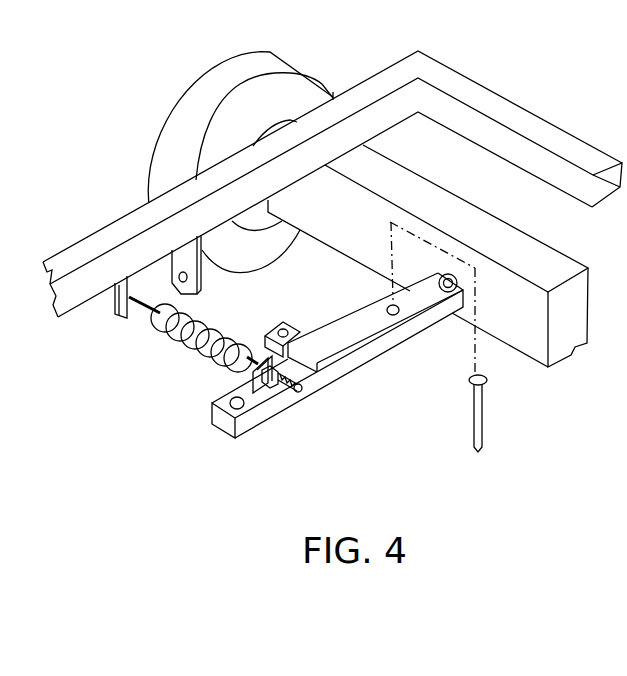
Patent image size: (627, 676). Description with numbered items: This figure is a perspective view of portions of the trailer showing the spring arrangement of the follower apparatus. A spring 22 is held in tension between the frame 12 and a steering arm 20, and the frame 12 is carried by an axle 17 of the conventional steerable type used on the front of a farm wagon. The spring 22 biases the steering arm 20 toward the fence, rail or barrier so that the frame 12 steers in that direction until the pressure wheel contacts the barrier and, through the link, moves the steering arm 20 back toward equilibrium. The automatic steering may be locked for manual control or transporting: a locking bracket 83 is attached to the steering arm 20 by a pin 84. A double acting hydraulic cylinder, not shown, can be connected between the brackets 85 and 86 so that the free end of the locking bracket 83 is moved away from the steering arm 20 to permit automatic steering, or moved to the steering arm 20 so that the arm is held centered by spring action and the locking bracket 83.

The frame 12 is at (138, 217).
The axle 17 is at (556, 253).
The steering arm 20 is at (243, 436).
The spring 22 is at (190, 348).
The locking bracket 83 is at (340, 349).
The pin 84 is at (488, 420).
The bracket 85 is at (202, 291).
The bracket 86 is at (291, 325).